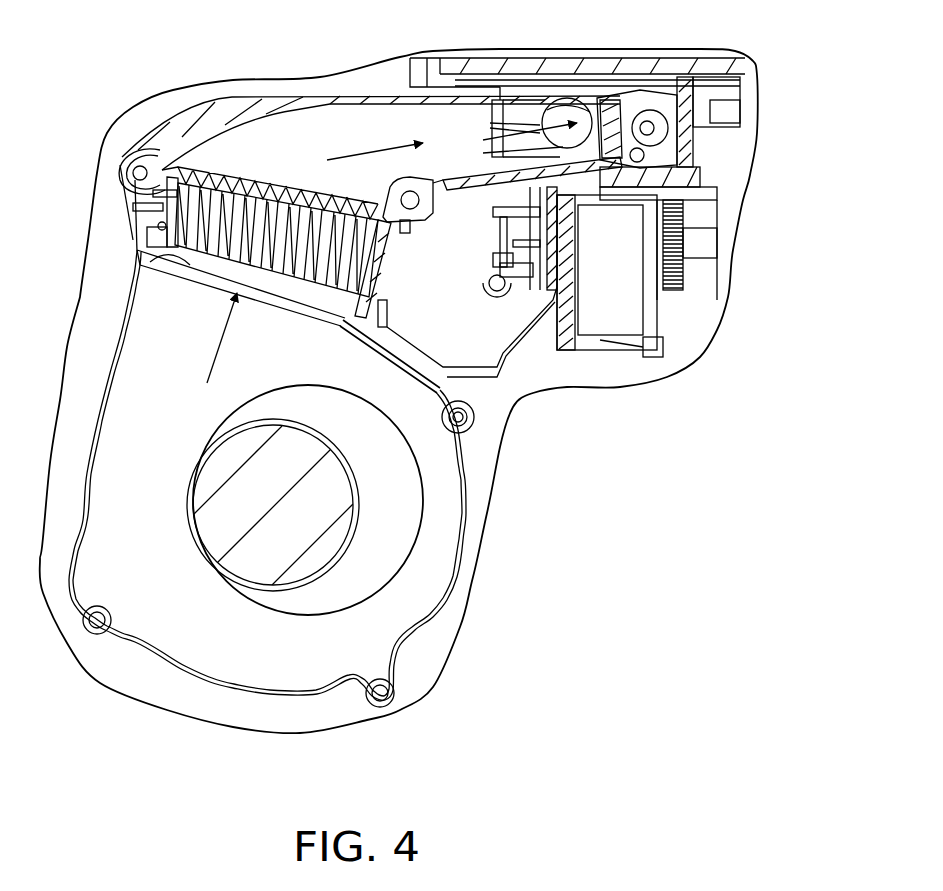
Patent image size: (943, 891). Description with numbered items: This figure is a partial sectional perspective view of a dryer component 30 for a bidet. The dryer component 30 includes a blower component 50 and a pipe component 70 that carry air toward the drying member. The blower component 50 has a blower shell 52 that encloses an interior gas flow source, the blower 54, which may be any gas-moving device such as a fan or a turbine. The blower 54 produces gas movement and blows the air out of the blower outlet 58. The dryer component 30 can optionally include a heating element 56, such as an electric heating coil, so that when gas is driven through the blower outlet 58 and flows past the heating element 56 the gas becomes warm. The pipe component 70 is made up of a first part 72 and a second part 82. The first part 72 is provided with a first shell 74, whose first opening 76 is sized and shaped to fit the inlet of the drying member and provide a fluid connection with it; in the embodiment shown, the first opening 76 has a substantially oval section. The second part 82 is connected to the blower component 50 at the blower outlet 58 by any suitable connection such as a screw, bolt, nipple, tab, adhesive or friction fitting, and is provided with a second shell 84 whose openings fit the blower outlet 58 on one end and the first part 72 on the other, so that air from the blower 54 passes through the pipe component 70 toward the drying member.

The dryer component 30 is at (198, 62).
The blower component 50 is at (476, 568).
The blower shell 52 is at (83, 483).
The blower 54 is at (177, 647).
The heating element 56 is at (177, 233).
The blower outlet 58 is at (190, 267).
The pipe component 70 is at (486, 190).
The first part 72 is at (520, 100).
The first shell 74 is at (563, 108).
The first opening 76 is at (597, 110).
The second part 82 is at (313, 117).
The second shell 84 is at (392, 97).